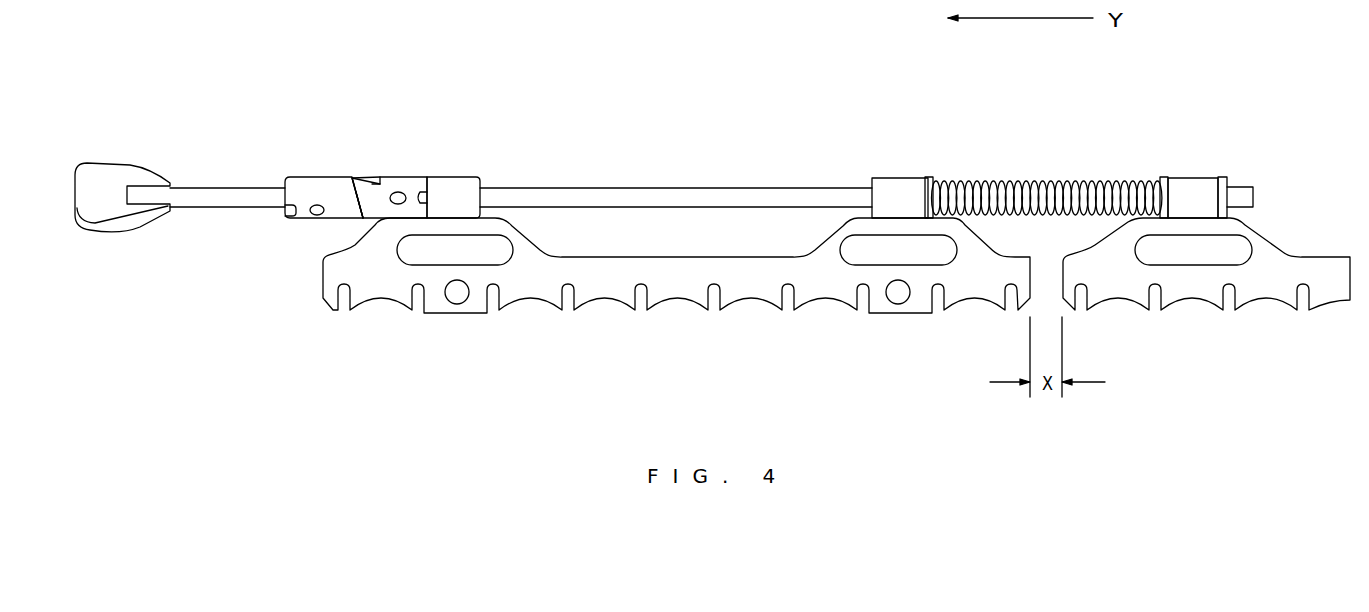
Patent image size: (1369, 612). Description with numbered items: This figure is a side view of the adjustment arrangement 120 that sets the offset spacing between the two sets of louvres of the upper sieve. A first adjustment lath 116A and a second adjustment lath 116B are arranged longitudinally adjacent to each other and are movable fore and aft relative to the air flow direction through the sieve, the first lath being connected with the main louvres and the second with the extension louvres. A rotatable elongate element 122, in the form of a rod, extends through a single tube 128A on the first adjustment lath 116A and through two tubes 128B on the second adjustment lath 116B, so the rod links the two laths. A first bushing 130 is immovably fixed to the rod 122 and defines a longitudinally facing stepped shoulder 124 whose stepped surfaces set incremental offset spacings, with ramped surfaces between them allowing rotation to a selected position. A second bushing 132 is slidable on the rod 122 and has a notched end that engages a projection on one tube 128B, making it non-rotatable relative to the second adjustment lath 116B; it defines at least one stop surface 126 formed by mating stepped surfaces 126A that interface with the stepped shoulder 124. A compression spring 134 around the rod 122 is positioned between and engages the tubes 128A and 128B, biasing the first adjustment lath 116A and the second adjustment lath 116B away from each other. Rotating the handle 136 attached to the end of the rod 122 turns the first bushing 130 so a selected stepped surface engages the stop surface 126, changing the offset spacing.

The first adjustment lath 116A is at (1262, 302).
The second adjustment lath 116B is at (387, 300).
The adjustment arrangement 120 is at (250, 318).
The rotatable elongate element 122 is at (622, 188).
The stepped shoulder 124 is at (353, 180).
The stop surface 126 is at (350, 213).
The mating stepped surfaces 126A is at (383, 183).
The tube 128A is at (1190, 178).
The tubes 128B is at (453, 177).
The first bushing 130 is at (303, 177).
The second bushing 132 is at (400, 177).
The spring 134 is at (1030, 180).
The handle 136 is at (110, 173).